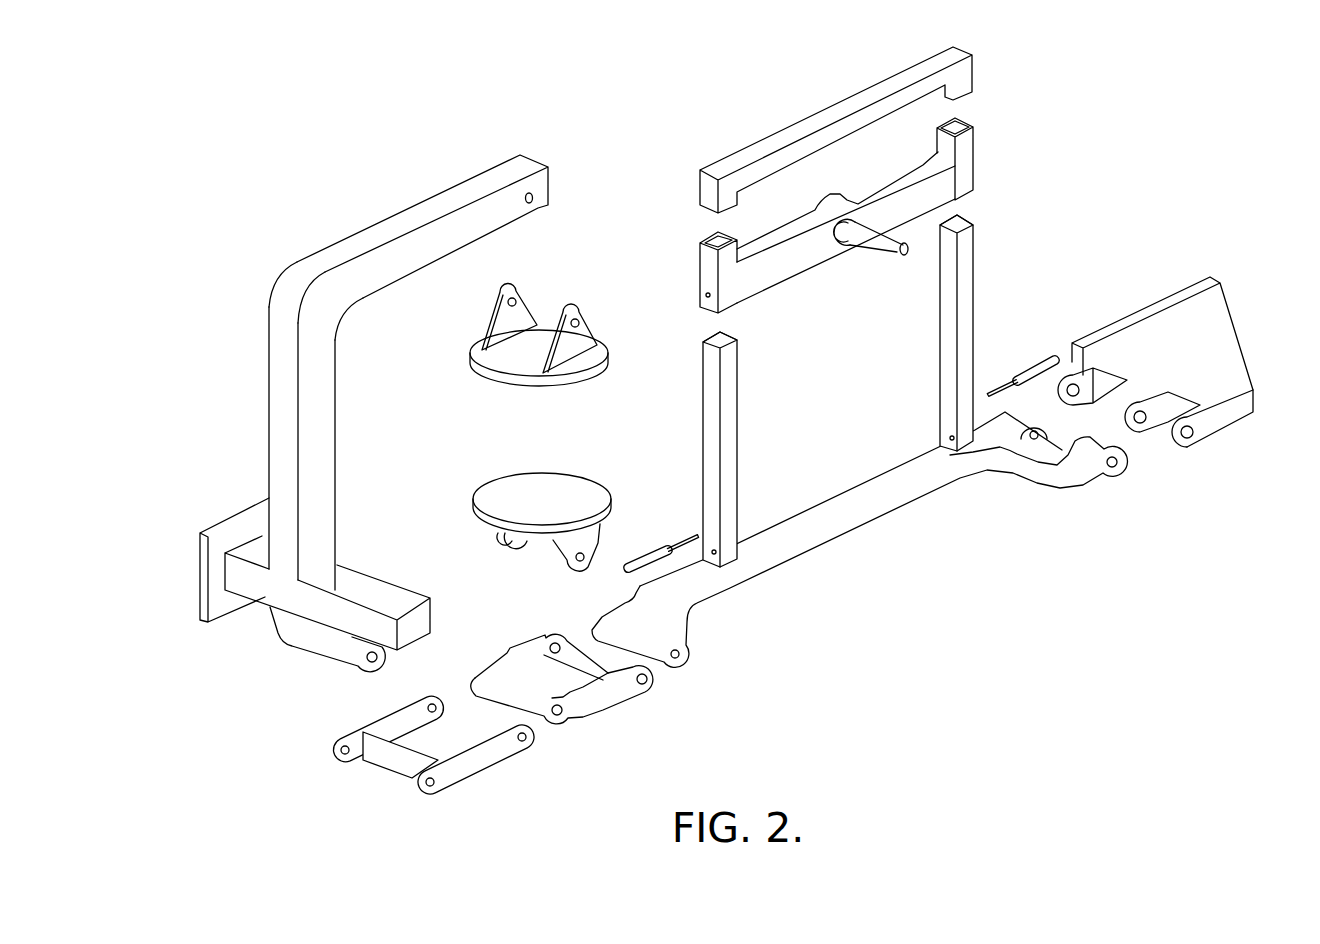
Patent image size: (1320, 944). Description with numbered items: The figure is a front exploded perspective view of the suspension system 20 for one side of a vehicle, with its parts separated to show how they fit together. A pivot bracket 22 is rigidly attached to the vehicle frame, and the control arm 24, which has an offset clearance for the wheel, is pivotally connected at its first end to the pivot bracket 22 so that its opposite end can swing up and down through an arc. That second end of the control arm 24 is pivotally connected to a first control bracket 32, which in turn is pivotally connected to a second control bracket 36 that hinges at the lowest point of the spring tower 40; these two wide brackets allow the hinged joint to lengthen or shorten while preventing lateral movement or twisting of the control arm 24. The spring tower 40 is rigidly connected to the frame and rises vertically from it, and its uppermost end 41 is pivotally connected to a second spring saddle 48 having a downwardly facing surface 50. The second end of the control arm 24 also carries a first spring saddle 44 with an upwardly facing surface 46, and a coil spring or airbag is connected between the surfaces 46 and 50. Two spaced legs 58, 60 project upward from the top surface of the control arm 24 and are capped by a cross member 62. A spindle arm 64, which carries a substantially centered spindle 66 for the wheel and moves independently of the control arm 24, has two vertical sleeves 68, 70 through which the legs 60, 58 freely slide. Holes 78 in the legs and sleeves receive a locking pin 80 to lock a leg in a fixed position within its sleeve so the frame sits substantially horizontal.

The suspension system 20 is at (1142, 92).
The pivot bracket 22 is at (1232, 428).
The control arm 24 is at (867, 527).
The first control bracket 32 is at (617, 703).
The second control bracket 36 is at (482, 770).
The spring tower 40 is at (270, 432).
The uppermost end 41 is at (515, 168).
The first spring saddle 44 is at (560, 557).
The upwardly facing surface 46 is at (551, 504).
The second spring saddle 48 is at (600, 335).
The downwardly facing surface 50 is at (528, 368).
The leg 58 is at (975, 280).
The leg 60 is at (738, 440).
The cross member 62 is at (782, 130).
The spindle arm 64 is at (817, 268).
The spindle 66 is at (902, 255).
The sleeve 68 is at (708, 270).
The sleeve 70 is at (970, 173).
The holes 78 is at (706, 295).
The locking pin 80 is at (652, 554).